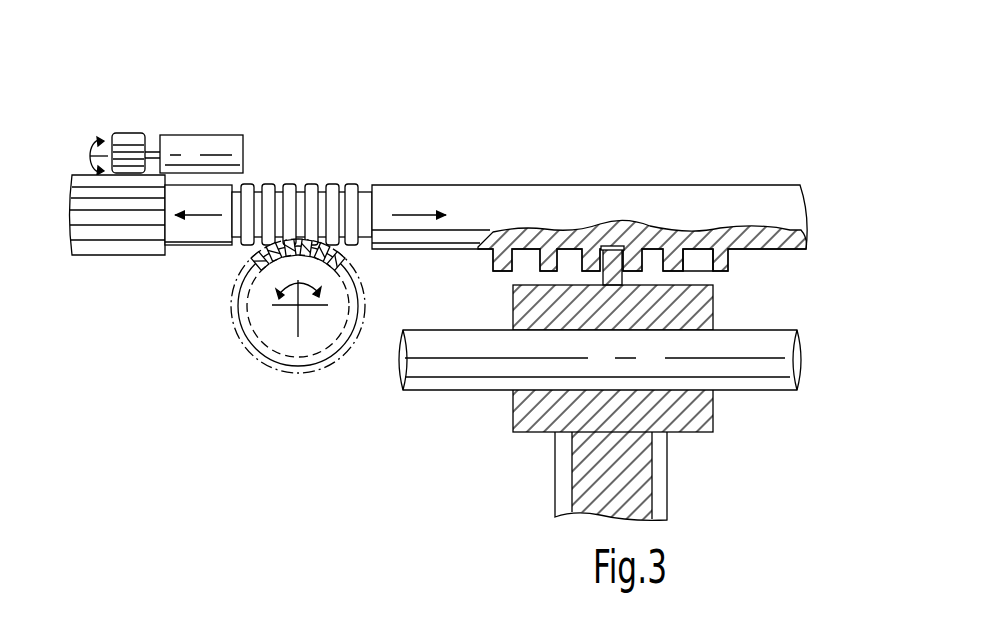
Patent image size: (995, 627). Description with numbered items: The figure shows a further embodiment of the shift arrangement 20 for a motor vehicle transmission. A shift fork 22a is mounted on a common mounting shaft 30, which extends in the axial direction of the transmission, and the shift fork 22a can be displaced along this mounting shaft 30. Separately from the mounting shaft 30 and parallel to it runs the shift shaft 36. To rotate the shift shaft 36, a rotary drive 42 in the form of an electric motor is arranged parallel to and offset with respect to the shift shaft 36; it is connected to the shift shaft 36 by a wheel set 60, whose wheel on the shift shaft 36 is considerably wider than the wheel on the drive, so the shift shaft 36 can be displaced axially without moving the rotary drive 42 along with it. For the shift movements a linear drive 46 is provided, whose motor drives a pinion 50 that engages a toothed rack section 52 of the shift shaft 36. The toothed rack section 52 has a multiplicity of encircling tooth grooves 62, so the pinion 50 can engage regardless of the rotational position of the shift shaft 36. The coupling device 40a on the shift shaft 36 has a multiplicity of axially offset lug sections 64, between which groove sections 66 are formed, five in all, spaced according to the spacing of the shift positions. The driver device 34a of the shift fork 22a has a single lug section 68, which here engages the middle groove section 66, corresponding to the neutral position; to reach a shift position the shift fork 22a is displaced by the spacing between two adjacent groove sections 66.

The shift arrangement 20 is at (713, 85).
The shift fork 22a is at (713, 430).
The mounting shaft 30 is at (767, 363).
The driver device 34a is at (611, 243).
The shift shaft 36 is at (624, 207).
The coupling device 40a is at (751, 267).
The rotary drive 42 is at (212, 150).
The linear drive 46 is at (232, 350).
The pinion 50 is at (325, 360).
The toothed rack section 52 is at (358, 170).
The wheel set 60 is at (130, 131).
The encircling tooth grooves 62 is at (323, 183).
The lug sections 64 is at (660, 251).
The groove section 66 is at (693, 262).
The lug section 68 is at (632, 255).